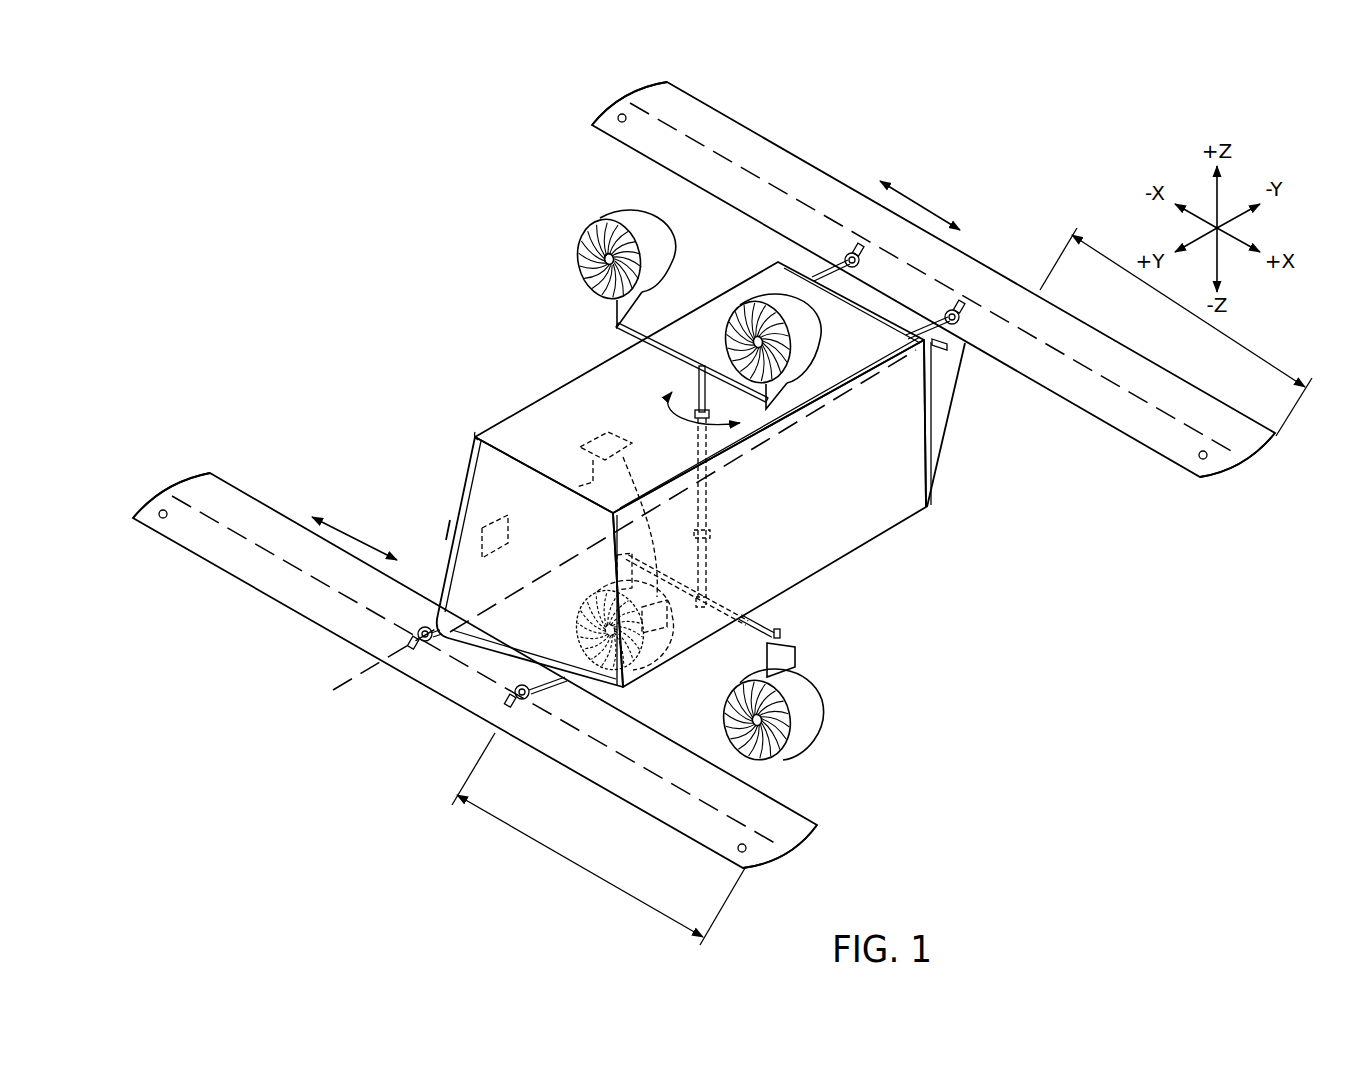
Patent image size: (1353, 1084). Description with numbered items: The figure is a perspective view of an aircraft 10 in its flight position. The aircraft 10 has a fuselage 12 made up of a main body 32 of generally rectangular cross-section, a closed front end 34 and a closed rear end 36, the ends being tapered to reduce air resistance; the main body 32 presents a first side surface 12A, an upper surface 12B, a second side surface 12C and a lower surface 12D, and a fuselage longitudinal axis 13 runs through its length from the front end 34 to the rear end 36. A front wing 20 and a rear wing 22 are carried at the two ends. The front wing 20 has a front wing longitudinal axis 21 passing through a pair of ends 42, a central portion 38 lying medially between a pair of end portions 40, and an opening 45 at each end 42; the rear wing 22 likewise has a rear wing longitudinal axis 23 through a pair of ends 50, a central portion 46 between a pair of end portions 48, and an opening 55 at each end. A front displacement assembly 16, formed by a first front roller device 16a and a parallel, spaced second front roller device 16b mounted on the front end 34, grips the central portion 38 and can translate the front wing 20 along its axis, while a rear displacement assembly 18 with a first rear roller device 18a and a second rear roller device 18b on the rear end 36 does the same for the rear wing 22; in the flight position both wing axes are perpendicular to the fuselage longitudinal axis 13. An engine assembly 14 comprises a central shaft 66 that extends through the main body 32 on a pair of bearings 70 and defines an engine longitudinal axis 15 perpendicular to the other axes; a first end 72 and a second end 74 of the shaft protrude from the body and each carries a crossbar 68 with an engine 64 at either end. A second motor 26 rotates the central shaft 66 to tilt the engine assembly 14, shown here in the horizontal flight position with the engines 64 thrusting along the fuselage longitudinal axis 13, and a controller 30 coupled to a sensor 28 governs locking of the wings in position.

The aircraft 10 is at (320, 330).
The fuselage 12 is at (695, 477).
The first side surface 12A is at (927, 508).
The upper surface 12B is at (592, 377).
The second side surface 12C is at (460, 472).
The lower surface 12D is at (845, 560).
The fuselage longitudinal axis 13 is at (345, 693).
The engine assembly 14 is at (590, 208).
The engine longitudinal axis 15 is at (712, 478).
The front displacement assembly 16 is at (461, 716).
The first front roller device 16a is at (410, 622).
The second front roller device 16b is at (538, 706).
The rear displacement assembly 18 is at (932, 271).
The first rear roller device 18a is at (853, 251).
The second rear roller device 18b is at (944, 306).
The front wing 20 is at (476, 688).
The front wing longitudinal axis 21 is at (236, 513).
The rear wing 22 is at (933, 279).
The rear wing longitudinal axis 23 is at (1166, 409).
The second motor 26 is at (655, 656).
The sensor 28 is at (495, 515).
The controller 30 is at (594, 434).
The main body 32 is at (478, 434).
The front end 34 is at (447, 522).
The rear end 36 is at (947, 432).
The central portion 38 is at (450, 691).
The end portions 40 is at (182, 541).
The ends 42 is at (170, 491).
The opening 45 is at (155, 519).
The central portion 46 is at (888, 206).
The end portions 48 is at (685, 109).
The ends 50 is at (614, 86).
The wing tip aperture 55 is at (614, 115).
The engines 64 is at (620, 216).
The central shaft 66 is at (712, 521).
The crossbars 68 is at (670, 346).
The bearings 70 is at (697, 421).
The first end 72 is at (707, 360).
The second end 74 is at (688, 590).